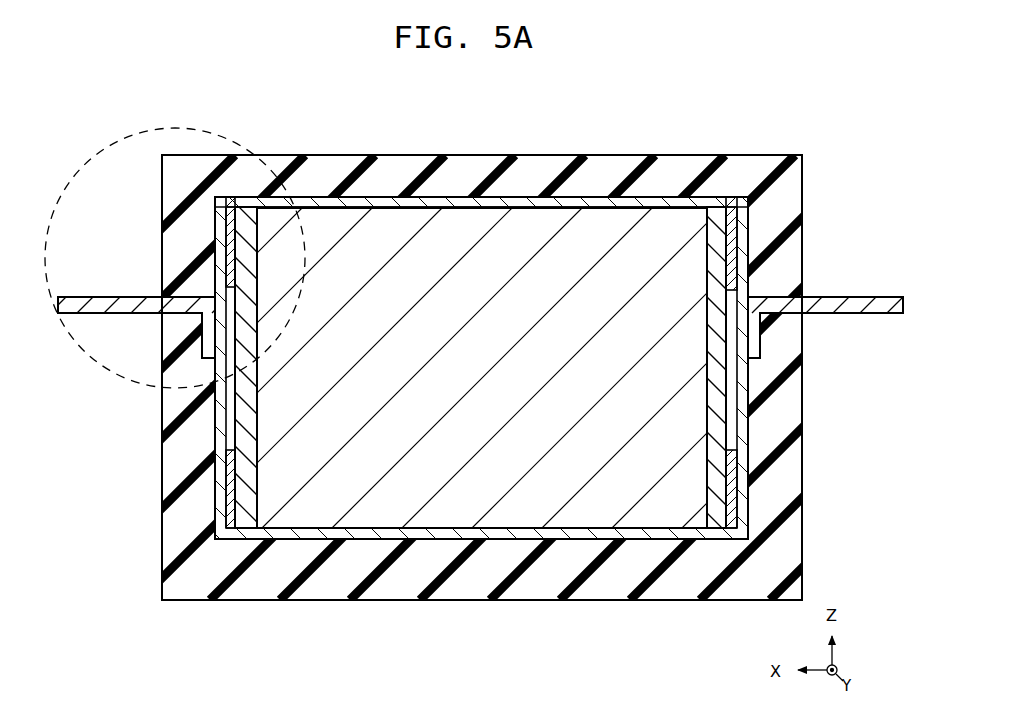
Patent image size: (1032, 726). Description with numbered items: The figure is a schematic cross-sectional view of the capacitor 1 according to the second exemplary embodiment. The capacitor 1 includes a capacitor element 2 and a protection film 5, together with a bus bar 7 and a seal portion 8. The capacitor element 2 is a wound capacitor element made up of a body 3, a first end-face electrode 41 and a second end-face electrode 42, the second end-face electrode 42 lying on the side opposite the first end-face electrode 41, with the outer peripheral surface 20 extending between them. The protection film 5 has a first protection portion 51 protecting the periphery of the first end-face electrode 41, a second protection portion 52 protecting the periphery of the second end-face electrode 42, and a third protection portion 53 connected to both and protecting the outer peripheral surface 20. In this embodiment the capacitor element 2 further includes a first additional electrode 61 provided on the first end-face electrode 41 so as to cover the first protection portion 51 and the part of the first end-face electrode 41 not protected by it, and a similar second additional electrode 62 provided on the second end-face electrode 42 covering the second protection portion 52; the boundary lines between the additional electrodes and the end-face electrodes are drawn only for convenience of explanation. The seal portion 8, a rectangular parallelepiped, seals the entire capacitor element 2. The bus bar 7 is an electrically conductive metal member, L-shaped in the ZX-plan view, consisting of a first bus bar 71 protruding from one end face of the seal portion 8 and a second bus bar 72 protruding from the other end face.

The capacitor 1 is at (824, 130).
The capacitor element 2 is at (652, 215).
The body 3 is at (525, 215).
The protection film 5 is at (450, 205).
The bus bar 7 is at (476, 313).
The first bus bar 71 is at (110, 306).
The second bus bar 72 is at (852, 306).
The seal portion 8 is at (763, 165).
The outer peripheral surface 20 is at (378, 199).
The first end-face electrode 41 is at (250, 415).
The second end-face electrode 42 is at (717, 412).
The first protection portion 51 is at (223, 243).
The second protection portion 52 is at (730, 243).
The third protection portion 53 is at (588, 206).
The first additional electrode 61 is at (228, 398).
The second additional electrode 62 is at (740, 398).